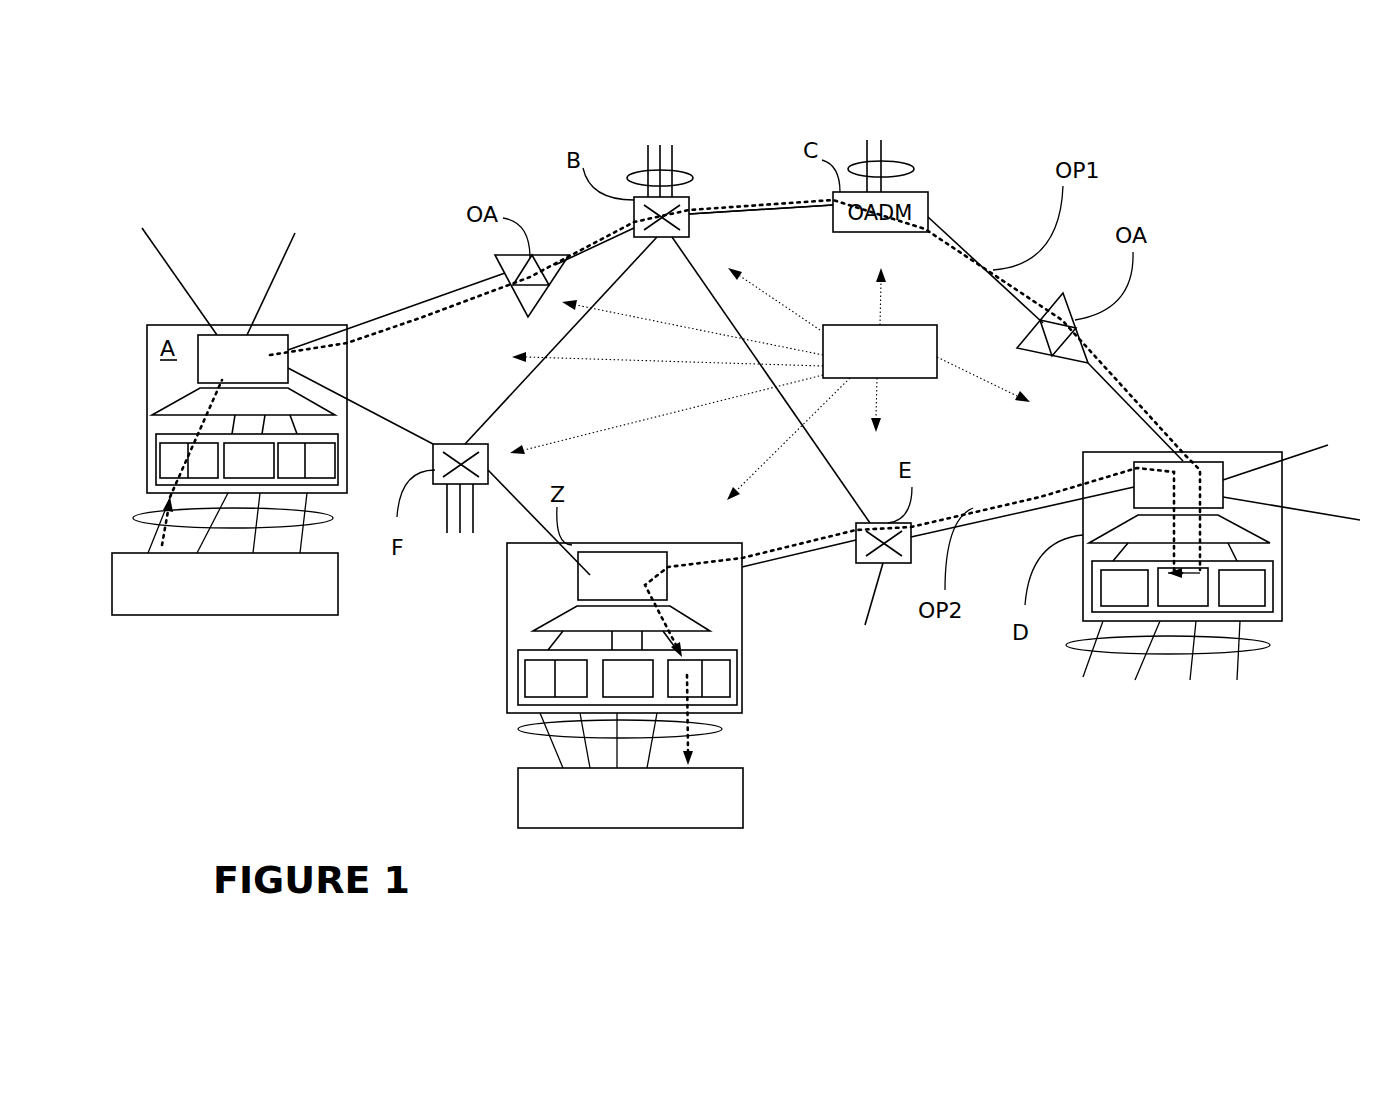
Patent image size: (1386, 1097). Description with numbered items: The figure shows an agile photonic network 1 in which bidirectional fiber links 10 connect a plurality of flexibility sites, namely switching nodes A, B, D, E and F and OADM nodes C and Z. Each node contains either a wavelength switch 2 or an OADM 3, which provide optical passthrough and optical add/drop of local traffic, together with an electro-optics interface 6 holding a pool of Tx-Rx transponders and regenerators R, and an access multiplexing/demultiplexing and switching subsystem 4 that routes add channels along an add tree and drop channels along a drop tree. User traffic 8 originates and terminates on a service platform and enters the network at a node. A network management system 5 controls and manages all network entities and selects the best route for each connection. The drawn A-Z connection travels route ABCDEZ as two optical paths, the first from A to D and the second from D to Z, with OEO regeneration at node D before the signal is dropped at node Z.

The photonic network 1 is at (632, 414).
The wavelength switch 2 is at (280, 335).
The OADM 3 is at (605, 552).
The access multiplexing/demultiplexing and switching subsystem 4 is at (160, 410).
The network management system 5 is at (902, 375).
The electro-optics interface 6 is at (160, 463).
The user traffic 8 is at (520, 735).
The bidirectional fiber link 10 is at (793, 195).